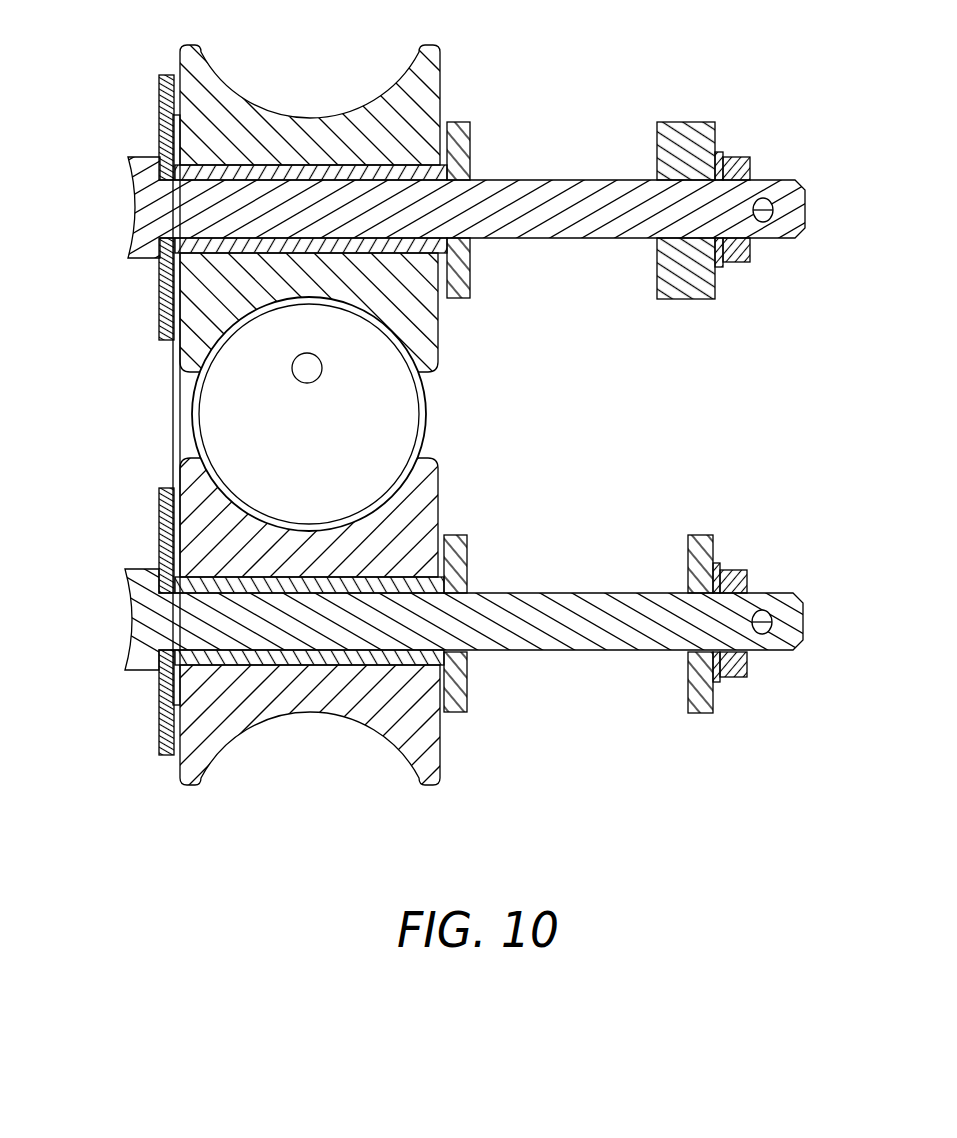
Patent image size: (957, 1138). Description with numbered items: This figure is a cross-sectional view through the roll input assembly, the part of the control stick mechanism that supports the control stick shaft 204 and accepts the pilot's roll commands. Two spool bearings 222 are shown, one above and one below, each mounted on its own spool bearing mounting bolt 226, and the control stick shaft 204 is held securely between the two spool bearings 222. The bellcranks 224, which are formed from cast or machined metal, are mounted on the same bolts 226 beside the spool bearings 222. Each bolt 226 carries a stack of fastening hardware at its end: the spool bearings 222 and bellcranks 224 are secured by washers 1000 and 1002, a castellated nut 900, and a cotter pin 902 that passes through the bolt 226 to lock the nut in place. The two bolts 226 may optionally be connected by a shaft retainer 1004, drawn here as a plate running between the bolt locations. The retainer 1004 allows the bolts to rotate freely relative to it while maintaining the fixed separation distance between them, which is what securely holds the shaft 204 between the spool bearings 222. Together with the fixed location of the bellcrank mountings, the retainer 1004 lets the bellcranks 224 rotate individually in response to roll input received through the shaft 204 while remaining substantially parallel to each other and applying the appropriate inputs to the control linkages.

The control stick shaft 204 is at (428, 428).
The spool bearing 222 is at (217, 107).
The bellcrank 224 is at (468, 140).
The spool bearing mounting bolt 226 is at (702, 217).
The castellated nut 900 is at (745, 662).
The cotter pin 902 is at (765, 613).
The washer 1000 is at (158, 310).
The washer 1002 is at (715, 682).
The shaft retainer 1004 is at (173, 423).